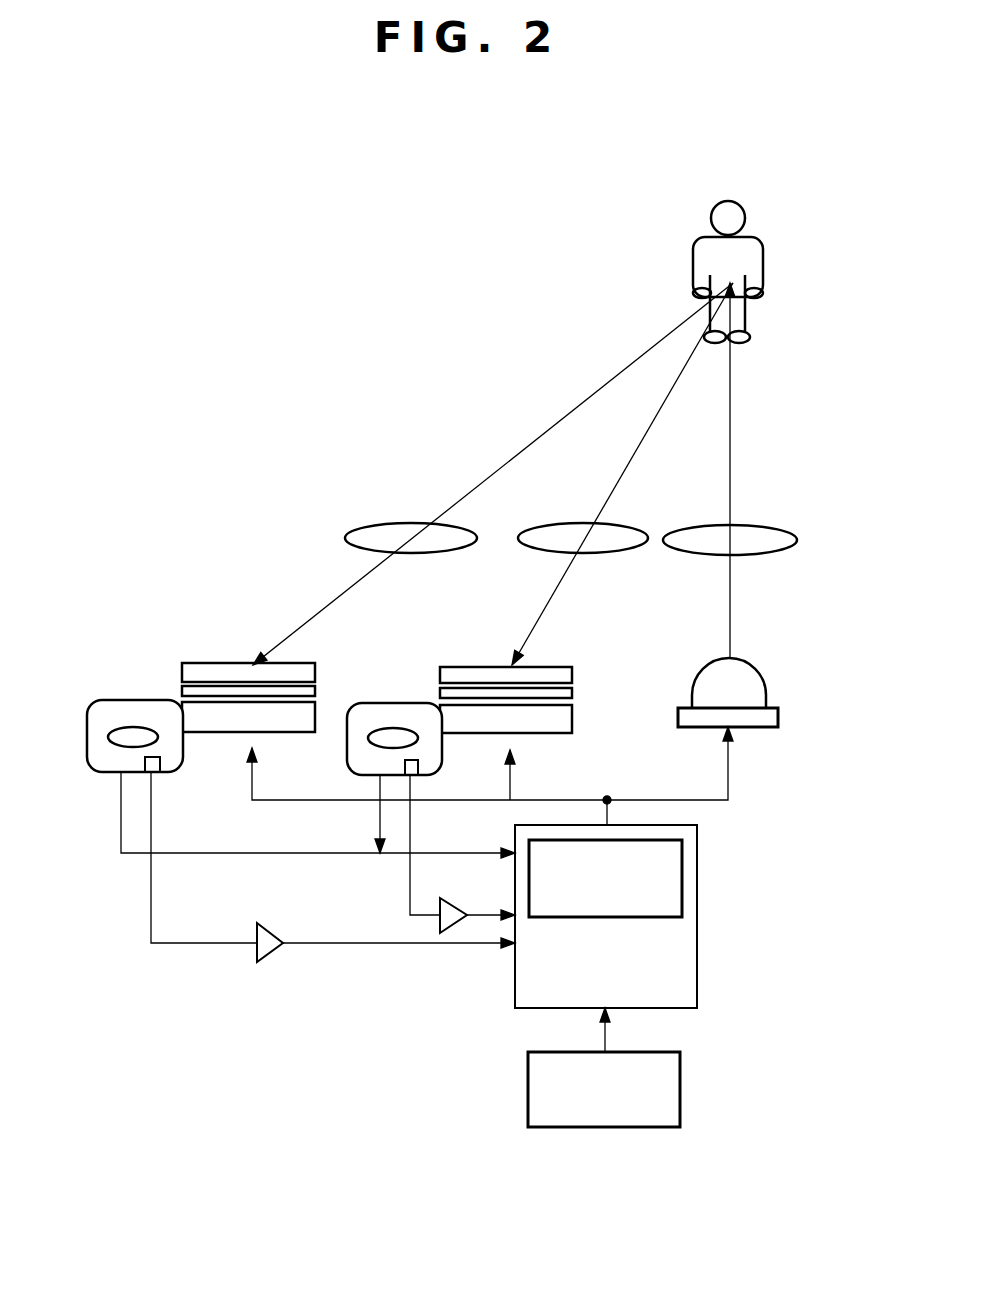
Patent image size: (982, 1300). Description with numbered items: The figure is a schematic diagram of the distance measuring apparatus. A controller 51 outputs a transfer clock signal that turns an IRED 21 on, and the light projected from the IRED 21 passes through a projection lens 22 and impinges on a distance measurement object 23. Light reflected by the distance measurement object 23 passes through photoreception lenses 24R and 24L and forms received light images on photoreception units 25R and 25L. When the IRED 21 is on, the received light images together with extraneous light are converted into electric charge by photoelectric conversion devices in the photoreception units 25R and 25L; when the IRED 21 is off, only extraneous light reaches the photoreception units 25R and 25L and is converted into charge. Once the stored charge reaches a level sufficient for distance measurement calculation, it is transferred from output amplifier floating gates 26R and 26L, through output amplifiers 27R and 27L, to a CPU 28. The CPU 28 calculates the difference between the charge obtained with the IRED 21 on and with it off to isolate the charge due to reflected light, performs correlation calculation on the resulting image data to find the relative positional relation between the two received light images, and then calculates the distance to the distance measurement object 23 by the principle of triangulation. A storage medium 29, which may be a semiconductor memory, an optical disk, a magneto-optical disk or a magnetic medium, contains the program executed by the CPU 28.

The IRED 21 is at (760, 675).
The projection lens 22 is at (785, 527).
The distance measurement object 23 is at (764, 258).
The photoreception lens 24L is at (365, 524).
The photoreception lens 24R is at (620, 524).
The photoreception unit 25L is at (165, 698).
The photoreception unit 25R is at (420, 698).
The output amplifier floating gate 26L is at (158, 773).
The output amplifier floating gate 26R is at (418, 776).
The output amplifier 27L is at (270, 960).
The output amplifier 27R is at (465, 880).
The CPU 28 is at (653, 916).
The storage medium 29 is at (681, 1068).
The controller 51 is at (683, 856).